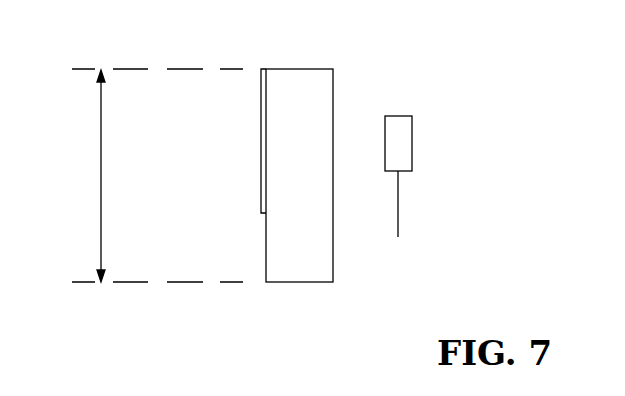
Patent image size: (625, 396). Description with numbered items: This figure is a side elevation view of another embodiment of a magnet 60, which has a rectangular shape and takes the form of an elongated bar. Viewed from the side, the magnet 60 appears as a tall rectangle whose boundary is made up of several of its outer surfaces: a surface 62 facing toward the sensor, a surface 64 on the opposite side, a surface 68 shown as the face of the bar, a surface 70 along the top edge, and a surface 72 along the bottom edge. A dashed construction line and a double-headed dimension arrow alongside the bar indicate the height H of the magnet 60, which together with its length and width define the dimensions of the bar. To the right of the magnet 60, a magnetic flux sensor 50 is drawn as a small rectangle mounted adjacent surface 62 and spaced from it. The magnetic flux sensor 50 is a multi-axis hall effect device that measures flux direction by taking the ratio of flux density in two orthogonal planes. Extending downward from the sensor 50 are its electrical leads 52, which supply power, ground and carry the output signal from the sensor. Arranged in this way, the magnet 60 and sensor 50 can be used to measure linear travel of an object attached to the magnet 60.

The height H is at (101, 178).
The magnetic flux sensor 50 is at (412, 150).
The electrical leads 52 is at (398, 208).
The magnet 60 is at (261, 113).
The outer surface 62 is at (333, 95).
The outer surface 64 is at (265, 248).
The outer surface 68 is at (280, 172).
The outer surface 70 is at (297, 69).
The outer surface 72 is at (308, 283).